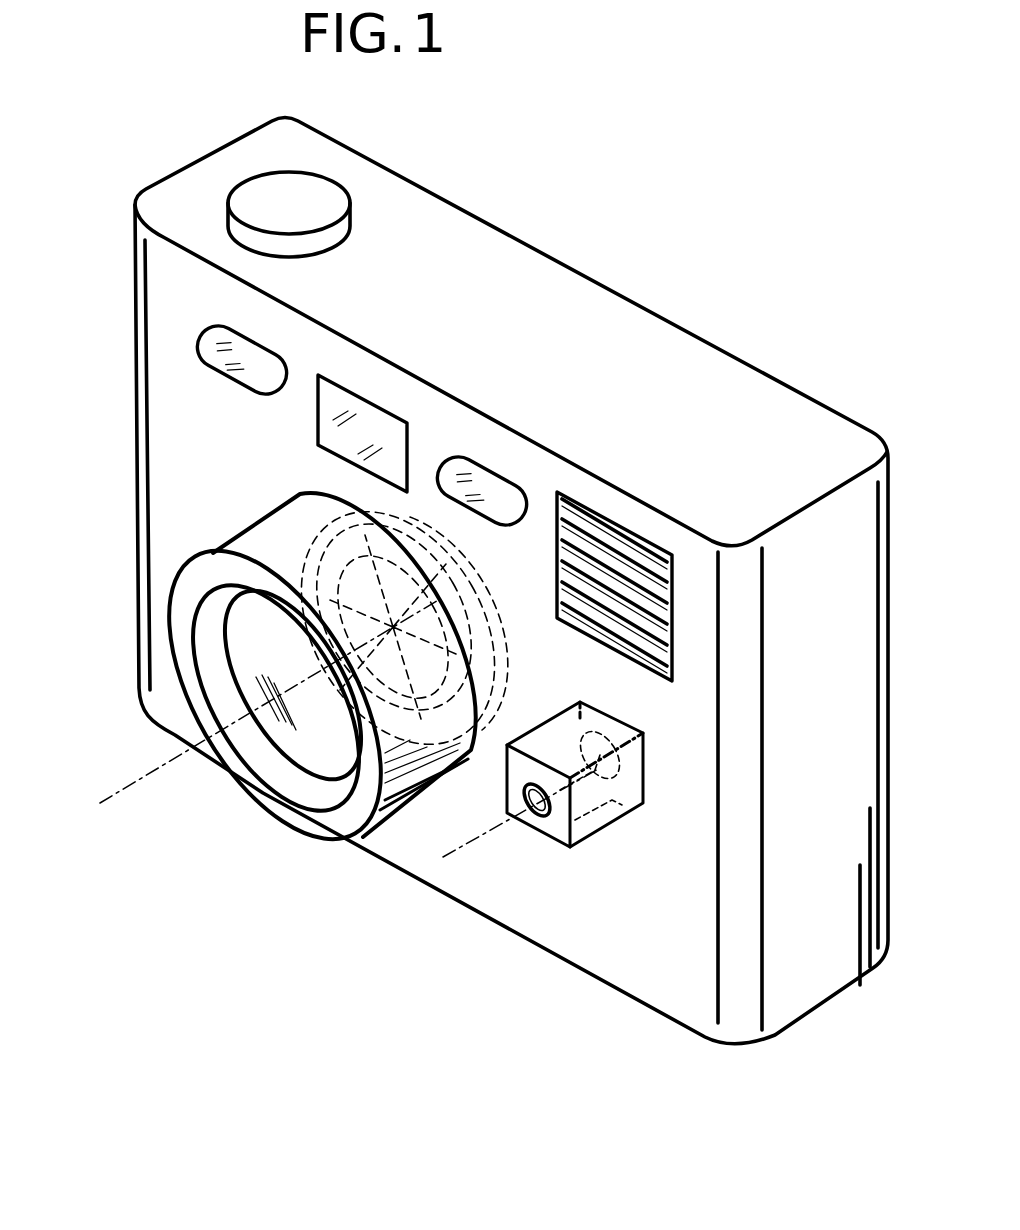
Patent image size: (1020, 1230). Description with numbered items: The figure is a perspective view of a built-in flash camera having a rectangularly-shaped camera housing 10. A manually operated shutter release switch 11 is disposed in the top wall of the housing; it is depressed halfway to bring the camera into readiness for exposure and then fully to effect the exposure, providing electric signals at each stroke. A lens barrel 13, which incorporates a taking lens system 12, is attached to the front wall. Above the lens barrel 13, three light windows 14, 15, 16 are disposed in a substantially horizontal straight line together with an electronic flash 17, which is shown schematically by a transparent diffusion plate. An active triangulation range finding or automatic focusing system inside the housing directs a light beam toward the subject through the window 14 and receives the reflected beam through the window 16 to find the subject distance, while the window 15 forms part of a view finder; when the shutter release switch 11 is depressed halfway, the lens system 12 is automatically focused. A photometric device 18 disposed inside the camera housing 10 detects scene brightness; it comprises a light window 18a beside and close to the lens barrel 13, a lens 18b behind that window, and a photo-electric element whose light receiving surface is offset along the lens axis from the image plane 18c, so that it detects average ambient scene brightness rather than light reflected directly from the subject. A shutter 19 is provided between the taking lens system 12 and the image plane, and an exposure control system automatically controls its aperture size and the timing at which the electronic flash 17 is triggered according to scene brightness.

The camera housing 10 is at (583, 305).
The shutter release switch 11 is at (349, 189).
The taking lens system 12 is at (303, 733).
The lens barrel 13 is at (406, 805).
The light window 14 is at (260, 351).
The light window 15 is at (376, 418).
The light window 16 is at (486, 480).
The electronic flash 17 is at (611, 521).
The photometric device 18 is at (611, 816).
The light window 18a is at (537, 816).
The lens 18b is at (620, 818).
The image plane 18c is at (648, 756).
The shutter 19 is at (481, 605).